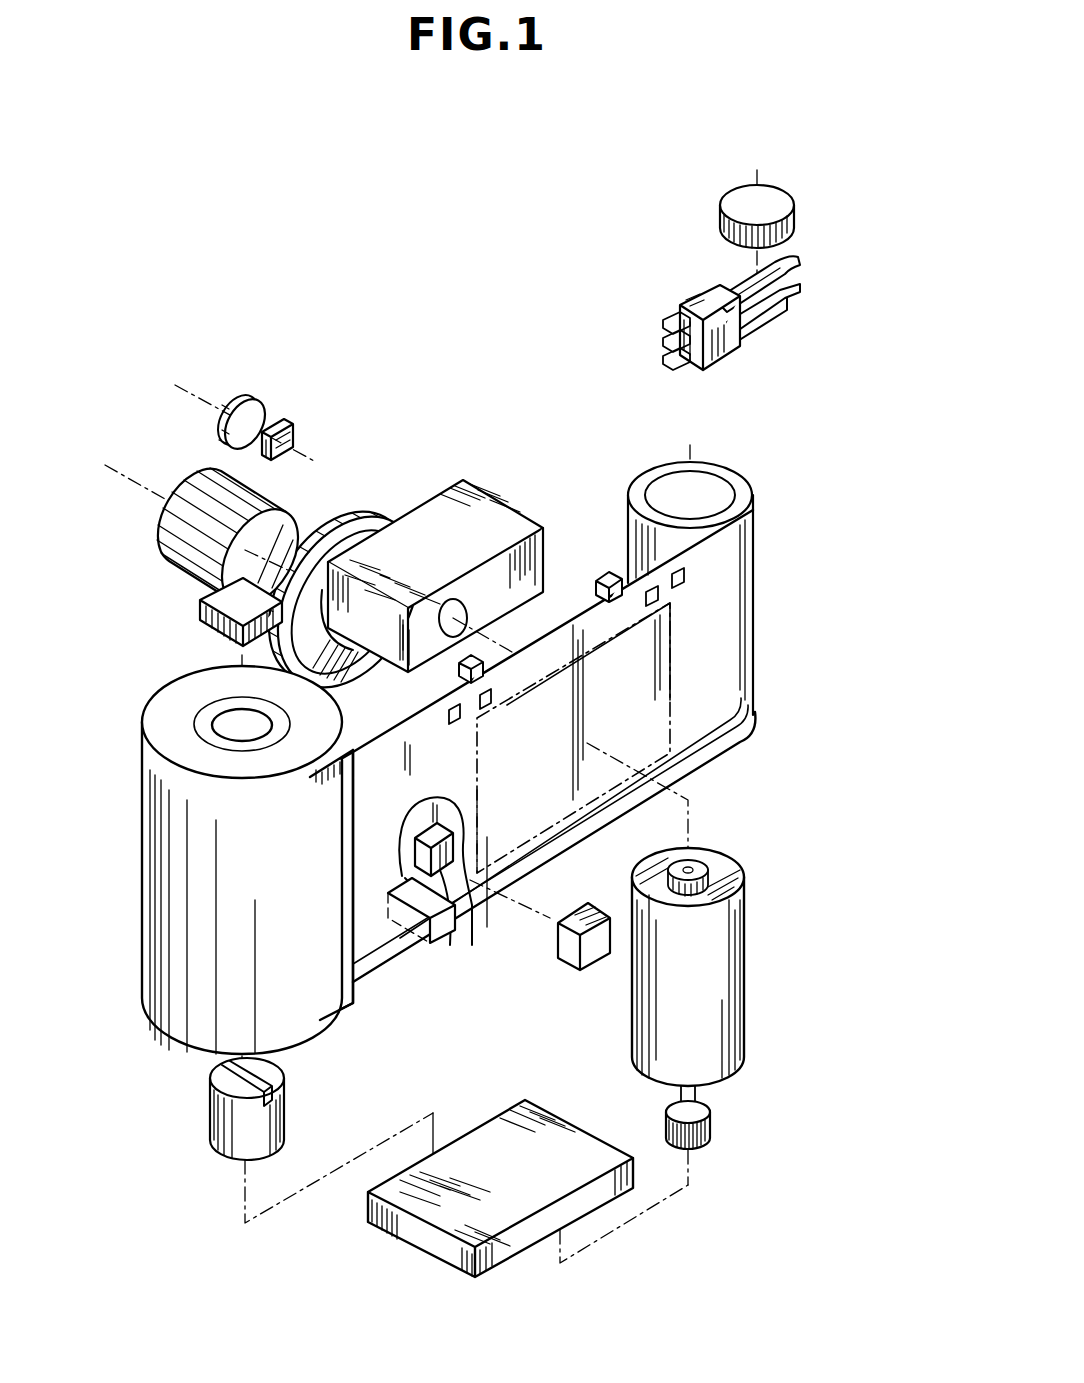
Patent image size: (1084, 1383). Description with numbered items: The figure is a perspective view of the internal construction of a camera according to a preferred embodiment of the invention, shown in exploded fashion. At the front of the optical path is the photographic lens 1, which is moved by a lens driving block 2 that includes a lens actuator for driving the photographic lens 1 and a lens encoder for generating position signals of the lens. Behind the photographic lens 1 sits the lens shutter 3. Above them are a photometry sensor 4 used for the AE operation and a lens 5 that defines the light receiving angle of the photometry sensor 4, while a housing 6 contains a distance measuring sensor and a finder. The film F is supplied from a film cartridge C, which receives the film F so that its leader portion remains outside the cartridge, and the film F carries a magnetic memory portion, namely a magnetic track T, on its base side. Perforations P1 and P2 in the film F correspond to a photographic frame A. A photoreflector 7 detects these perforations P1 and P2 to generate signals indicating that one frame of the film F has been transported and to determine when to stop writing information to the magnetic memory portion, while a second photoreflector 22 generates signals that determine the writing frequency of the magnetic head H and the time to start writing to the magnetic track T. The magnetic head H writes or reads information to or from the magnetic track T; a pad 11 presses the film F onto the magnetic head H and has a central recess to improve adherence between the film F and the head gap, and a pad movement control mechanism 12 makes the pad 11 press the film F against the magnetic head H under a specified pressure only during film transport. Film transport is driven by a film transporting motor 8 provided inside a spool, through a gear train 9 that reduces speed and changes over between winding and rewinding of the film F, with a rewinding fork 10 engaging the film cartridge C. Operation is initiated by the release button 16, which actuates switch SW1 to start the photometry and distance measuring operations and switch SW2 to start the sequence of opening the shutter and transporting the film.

The photographic lens 1 is at (165, 543).
The lens driving block 2 is at (200, 611).
The lens shutter 3 is at (377, 512).
The photometry sensor 4 is at (292, 430).
The lens 5 is at (255, 402).
The housing 6 is at (506, 504).
The photoreflector 7 is at (458, 672).
The film transporting motor 8 is at (745, 953).
The gear train 9 is at (495, 1108).
The rewinding fork 10 is at (210, 1103).
The pad 11 is at (470, 905).
The pad movement control mechanism 12 is at (428, 946).
The release button 16 is at (795, 218).
The photoreflector 22 is at (600, 572).
The photographic frame A is at (548, 820).
The film cartridge C is at (148, 828).
The film F is at (755, 586).
The magnetic head H is at (583, 965).
The perforation P1 is at (683, 590).
The perforation P2 is at (654, 608).
The switch SW1 is at (805, 268).
The switch SW2 is at (805, 294).
The magnetic track T is at (594, 814).